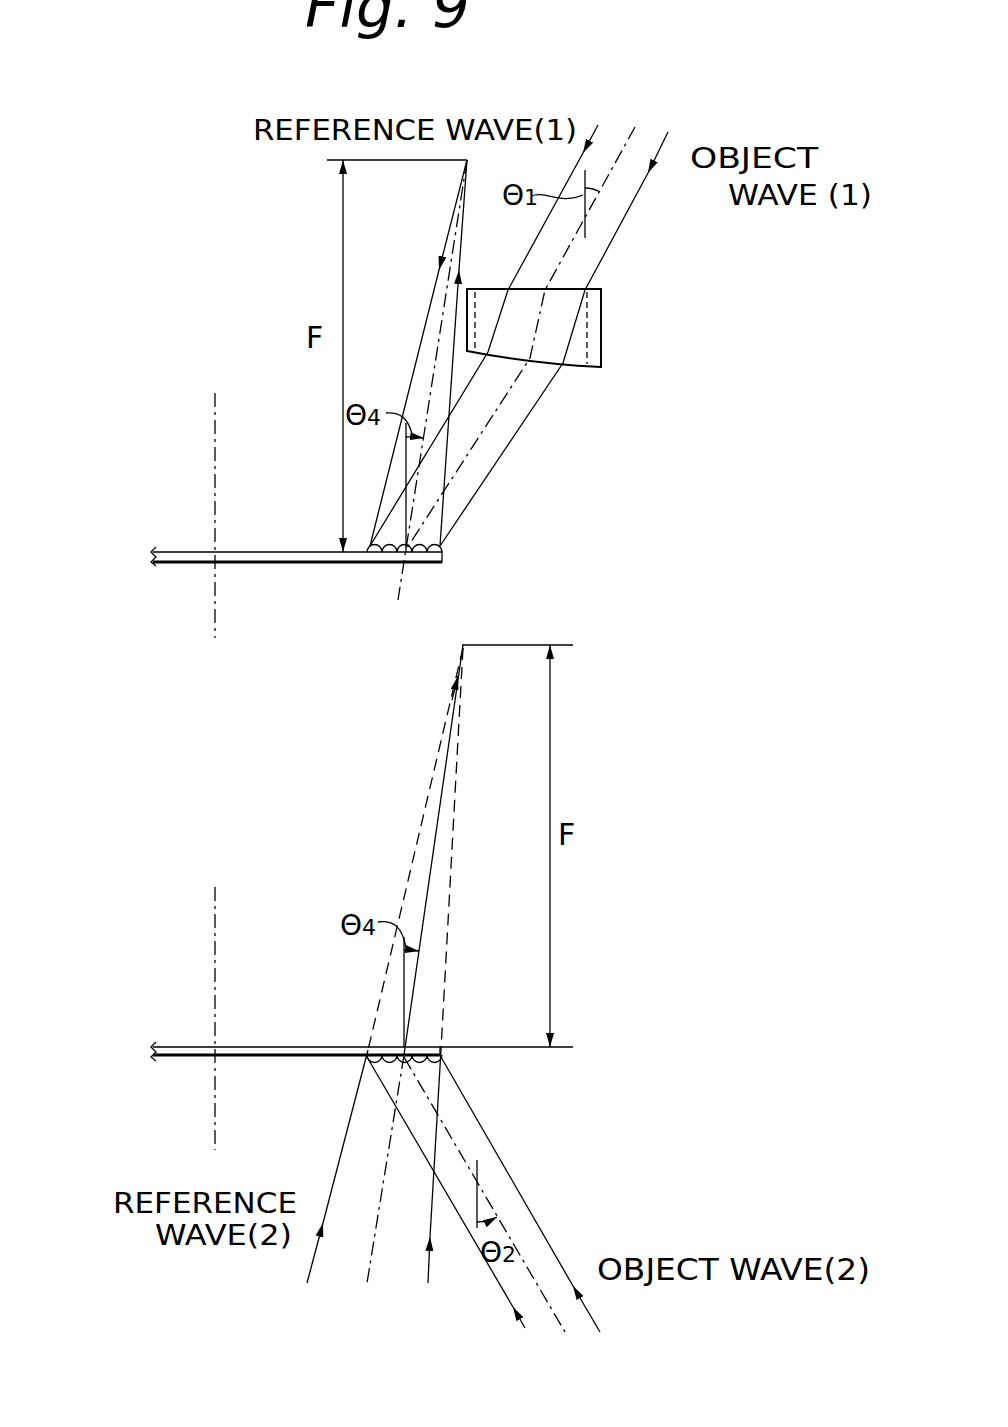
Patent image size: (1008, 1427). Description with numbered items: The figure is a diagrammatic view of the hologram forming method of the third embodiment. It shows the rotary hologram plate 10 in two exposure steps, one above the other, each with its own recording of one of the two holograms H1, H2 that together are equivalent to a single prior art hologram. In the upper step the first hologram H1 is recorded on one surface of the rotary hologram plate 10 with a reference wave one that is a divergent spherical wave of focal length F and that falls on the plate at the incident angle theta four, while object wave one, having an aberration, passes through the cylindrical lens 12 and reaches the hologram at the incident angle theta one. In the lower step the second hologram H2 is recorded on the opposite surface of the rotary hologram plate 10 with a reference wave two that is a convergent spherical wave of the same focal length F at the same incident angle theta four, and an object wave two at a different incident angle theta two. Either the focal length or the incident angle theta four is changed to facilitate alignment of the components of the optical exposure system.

The rotary hologram plate 10 is at (205, 1040).
The cylindrical lens 12 is at (596, 312).
The first hologram H1 is at (440, 543).
The second hologram H2 is at (425, 1062).